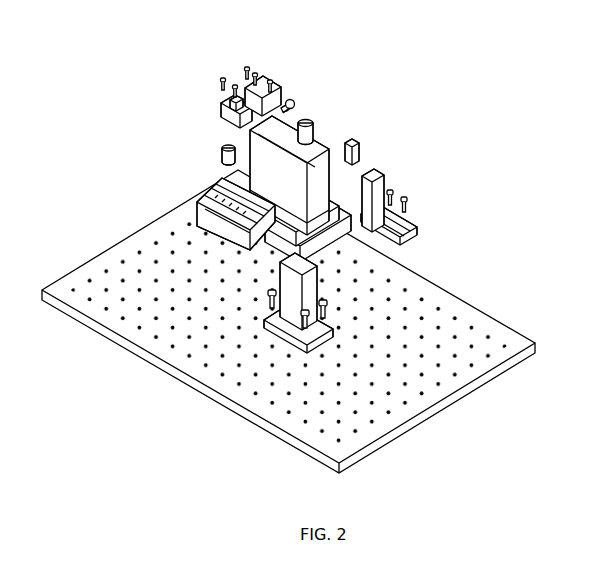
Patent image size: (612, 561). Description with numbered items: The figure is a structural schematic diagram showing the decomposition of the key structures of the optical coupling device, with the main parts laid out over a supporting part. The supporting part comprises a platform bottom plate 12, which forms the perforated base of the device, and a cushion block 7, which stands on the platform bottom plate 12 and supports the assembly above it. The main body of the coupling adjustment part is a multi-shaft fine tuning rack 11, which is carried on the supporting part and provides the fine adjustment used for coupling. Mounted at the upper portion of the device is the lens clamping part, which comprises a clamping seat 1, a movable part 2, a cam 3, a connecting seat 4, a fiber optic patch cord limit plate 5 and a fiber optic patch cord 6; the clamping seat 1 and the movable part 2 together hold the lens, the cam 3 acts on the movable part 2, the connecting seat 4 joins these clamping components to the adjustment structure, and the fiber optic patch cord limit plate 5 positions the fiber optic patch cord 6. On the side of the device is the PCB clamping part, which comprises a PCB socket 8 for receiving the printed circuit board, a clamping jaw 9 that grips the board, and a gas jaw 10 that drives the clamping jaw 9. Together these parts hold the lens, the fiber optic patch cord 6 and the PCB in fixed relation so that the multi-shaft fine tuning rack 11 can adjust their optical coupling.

The clamping seat 1 is at (255, 63).
The movable part 2 is at (275, 82).
The cam 3 is at (292, 100).
The connecting seat 4 is at (240, 92).
The fiber optic patch cord limit plate 5 is at (225, 103).
The fiber optic patch cord 6 is at (223, 115).
The cushion block 7 is at (317, 276).
The PCB socket 8 is at (382, 177).
The clamping jaw 9 is at (350, 150).
The gas jaw 10 is at (348, 205).
The multi-shaft fine tuning rack 11 is at (190, 202).
The platform bottom plate 12 is at (92, 280).